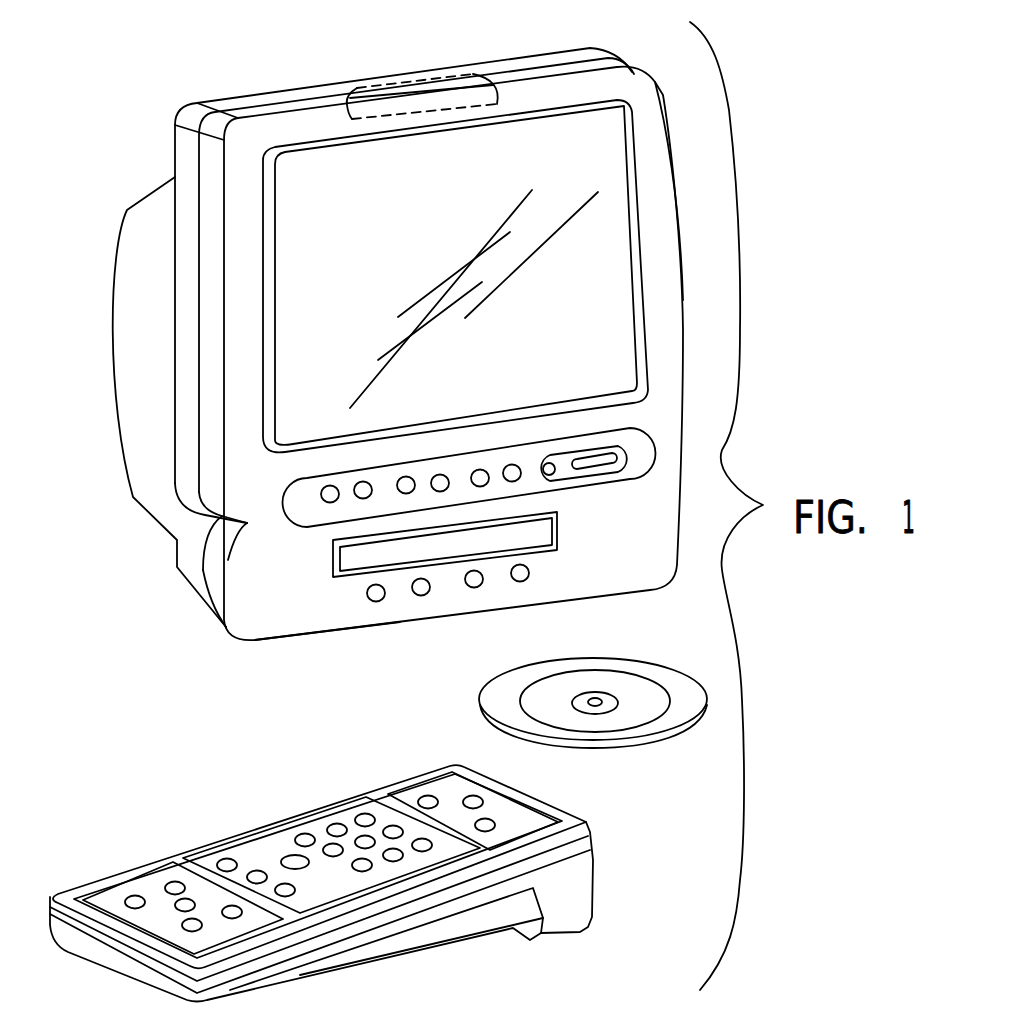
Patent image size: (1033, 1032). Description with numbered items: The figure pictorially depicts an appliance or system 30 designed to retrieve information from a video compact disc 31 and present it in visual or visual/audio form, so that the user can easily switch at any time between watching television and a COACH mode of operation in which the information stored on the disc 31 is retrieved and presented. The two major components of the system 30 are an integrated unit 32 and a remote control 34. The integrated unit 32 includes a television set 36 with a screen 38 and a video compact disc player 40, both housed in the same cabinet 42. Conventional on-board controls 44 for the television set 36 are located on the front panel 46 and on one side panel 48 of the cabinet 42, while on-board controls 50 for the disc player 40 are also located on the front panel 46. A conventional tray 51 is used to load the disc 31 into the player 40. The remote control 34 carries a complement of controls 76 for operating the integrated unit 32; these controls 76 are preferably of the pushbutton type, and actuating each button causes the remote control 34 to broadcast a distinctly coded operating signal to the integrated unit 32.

The system 30 is at (756, 335).
The video compact disc 31 is at (455, 682).
The integrated unit 32 is at (222, 62).
The remote control 34 is at (177, 822).
The television set 36 is at (105, 360).
The screen 38 is at (336, 202).
The video compact disc player 40 is at (250, 549).
The cabinet 42 is at (295, 653).
The on-board controls 44 is at (628, 492).
The front panel 46 is at (596, 572).
The side panel 48 is at (681, 293).
The on-board controls 50 is at (352, 598).
The tray 51 is at (557, 521).
The controls 76 is at (235, 934).